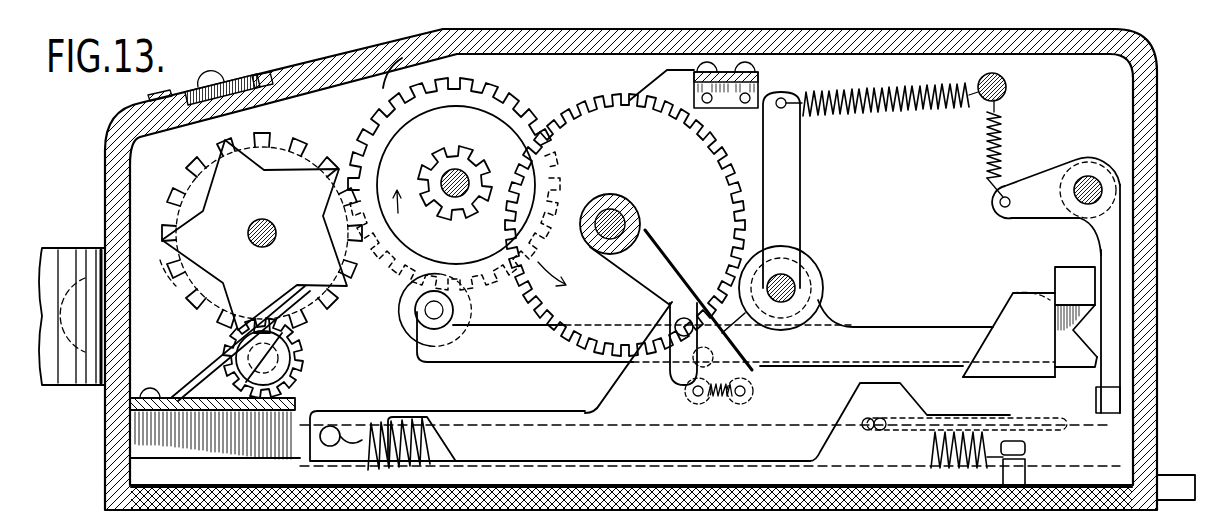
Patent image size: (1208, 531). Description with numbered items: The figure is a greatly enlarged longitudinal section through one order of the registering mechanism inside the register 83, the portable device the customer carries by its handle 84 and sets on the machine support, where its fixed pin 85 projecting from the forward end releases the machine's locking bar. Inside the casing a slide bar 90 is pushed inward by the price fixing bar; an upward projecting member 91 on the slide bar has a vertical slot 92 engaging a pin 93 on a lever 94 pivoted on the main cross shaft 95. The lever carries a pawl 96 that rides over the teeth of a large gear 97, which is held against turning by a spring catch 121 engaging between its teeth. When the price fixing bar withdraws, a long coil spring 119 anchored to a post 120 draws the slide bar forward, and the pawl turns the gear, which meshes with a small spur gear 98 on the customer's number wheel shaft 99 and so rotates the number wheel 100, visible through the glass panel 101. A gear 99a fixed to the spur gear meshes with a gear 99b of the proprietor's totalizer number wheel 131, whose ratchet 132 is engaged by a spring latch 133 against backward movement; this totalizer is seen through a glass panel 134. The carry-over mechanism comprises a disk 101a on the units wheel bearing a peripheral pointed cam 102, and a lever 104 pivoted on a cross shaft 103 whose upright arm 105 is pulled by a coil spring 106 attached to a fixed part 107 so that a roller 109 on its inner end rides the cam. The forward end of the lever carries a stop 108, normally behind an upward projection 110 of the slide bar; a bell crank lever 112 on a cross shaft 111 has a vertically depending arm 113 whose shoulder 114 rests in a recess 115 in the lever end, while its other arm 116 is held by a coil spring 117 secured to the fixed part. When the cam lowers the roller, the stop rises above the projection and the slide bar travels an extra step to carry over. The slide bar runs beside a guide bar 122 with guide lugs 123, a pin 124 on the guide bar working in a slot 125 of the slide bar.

The register 83 is at (1158, 150).
The handle 84 is at (68, 255).
The fixed pin 85 is at (1175, 500).
The slide bar 90 is at (488, 411).
The upward projecting member 91 is at (615, 383).
The vertical slot 92 is at (670, 305).
The pin 93 is at (686, 317).
The lever 94 is at (595, 282).
The main cross shaft 95 is at (640, 221).
The pawl 96 is at (750, 315).
The large gear 97 is at (722, 150).
The small spur gear 98 is at (456, 160).
The customer's number wheel shaft 99 is at (440, 168).
The gear 99a is at (382, 120).
The gear 99b is at (180, 300).
The number wheel 100 is at (500, 95).
The glass panel 101 is at (392, 80).
The disk 101a is at (540, 168).
The peripheral pointed cam 102 is at (395, 295).
The cross shaft 103 is at (797, 288).
The lever 104 is at (903, 332).
The upright arm 105 is at (800, 181).
The coil spring 106 is at (900, 116).
The fixed part 107 is at (1010, 90).
The stop 108 is at (1060, 266).
The roller 109 is at (403, 328).
The upward projection 110 is at (1007, 290).
The cross shaft 111 is at (1087, 178).
The bell crank lever 112 is at (1121, 183).
The vertically depending arm 113 is at (1112, 280).
The shoulder 114 is at (1092, 352).
The recess 115 is at (1080, 327).
The arm 116 is at (1029, 182).
The coil spring 117 is at (986, 170).
The coil spring 119 is at (945, 470).
The post 120 is at (1028, 478).
The spring catch 121 is at (650, 86).
The guide bar 122 is at (402, 465).
The guide lugs 123 is at (432, 418).
The pin 124 is at (860, 421).
The slot 125 is at (962, 420).
The number wheel 131 is at (185, 172).
The ratchet 132 is at (175, 228).
The spring latch 133 is at (200, 372).
The glass panel 134 is at (240, 84).